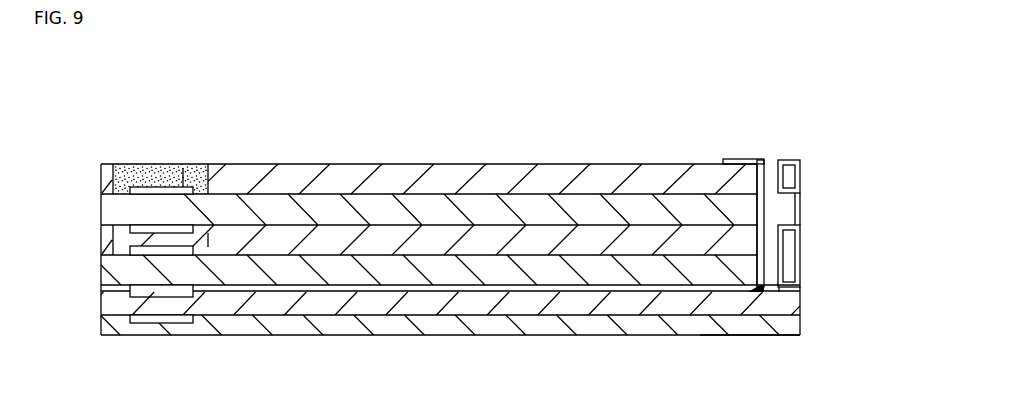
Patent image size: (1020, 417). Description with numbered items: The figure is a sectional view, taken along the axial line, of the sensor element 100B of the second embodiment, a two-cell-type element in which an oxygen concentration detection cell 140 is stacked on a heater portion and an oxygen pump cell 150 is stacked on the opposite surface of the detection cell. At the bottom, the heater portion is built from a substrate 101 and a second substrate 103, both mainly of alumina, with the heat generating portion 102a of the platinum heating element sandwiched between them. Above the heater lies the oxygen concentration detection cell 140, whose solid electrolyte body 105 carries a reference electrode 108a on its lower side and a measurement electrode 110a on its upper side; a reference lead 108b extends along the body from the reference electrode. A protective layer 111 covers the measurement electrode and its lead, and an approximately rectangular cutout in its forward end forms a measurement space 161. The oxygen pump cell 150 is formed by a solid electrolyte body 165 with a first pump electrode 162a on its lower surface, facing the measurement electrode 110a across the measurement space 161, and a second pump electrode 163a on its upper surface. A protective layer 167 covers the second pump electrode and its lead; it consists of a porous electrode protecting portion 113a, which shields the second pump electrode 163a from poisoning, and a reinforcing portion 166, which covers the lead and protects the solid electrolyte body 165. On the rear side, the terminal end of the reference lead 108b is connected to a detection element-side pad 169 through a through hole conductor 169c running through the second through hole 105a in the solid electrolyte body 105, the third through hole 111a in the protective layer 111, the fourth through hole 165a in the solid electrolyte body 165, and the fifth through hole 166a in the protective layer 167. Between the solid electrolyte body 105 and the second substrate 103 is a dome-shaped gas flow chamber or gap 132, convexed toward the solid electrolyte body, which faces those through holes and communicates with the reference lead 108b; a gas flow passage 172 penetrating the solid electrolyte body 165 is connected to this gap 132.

The sensor element 100B is at (645, 100).
The reinforcing portion 166 is at (351, 162).
The protective layer 167 is at (114, 163).
The second pump electrode 163a is at (155, 186).
The porous electrode protecting portion 113a is at (183, 172).
The solid electrolyte body 165 is at (103, 198).
The first pump electrode 162a is at (103, 211).
The protective layer 111 is at (105, 247).
The measurement space 161 is at (128, 244).
The measurement electrode 110a is at (194, 256).
The solid electrolyte body 105 is at (106, 264).
The reference lead 108b is at (278, 293).
The reference electrode 108a is at (130, 290).
The second substrate 103 is at (781, 303).
The substrate 101 is at (791, 335).
The heat generating portion 102a is at (146, 325).
The gas flow chamber (gap) 132 is at (745, 337).
The detection element-side pad 169 is at (742, 157).
The gas flow passage 172 is at (798, 183).
The oxygen pump cell 150 is at (790, 206).
The through hole conductor 169c is at (784, 250).
The oxygen concentration detection cell 140 is at (799, 285).
The fifth through hole 166a is at (772, 147).
The fourth through hole 165a is at (822, 143).
The third through hole 111a is at (790, 170).
The second through hole 105a is at (820, 185).